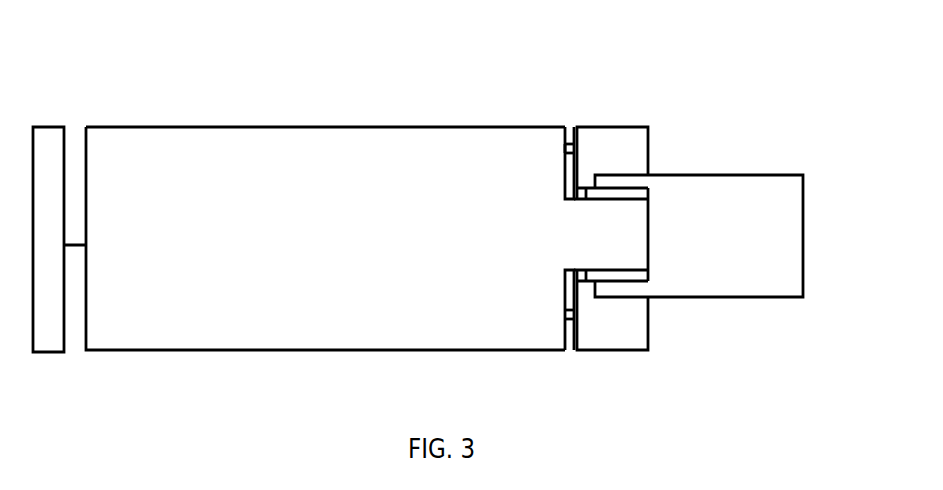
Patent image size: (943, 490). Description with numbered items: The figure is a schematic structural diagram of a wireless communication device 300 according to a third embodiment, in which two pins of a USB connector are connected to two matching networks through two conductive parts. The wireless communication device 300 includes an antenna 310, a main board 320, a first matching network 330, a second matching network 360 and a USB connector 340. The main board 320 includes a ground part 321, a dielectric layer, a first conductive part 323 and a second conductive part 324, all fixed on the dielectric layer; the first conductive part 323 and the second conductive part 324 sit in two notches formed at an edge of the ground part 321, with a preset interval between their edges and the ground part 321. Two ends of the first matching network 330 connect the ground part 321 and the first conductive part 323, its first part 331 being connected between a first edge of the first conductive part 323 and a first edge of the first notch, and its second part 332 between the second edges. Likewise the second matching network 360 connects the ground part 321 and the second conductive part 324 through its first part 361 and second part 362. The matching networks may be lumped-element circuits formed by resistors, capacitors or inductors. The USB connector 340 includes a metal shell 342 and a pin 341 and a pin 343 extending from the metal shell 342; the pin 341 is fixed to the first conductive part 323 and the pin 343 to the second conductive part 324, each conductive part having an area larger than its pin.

The wireless communication device 300 is at (447, 34).
The antenna 310 is at (55, 127).
The main board 320 is at (395, 89).
The ground part 321 is at (236, 127).
The first conductive part 323 is at (565, 128).
The second conductive part 324 is at (605, 338).
The first matching network 330 is at (436, 223).
The first part 331 is at (565, 154).
The second part 332 is at (573, 200).
The USB connector 340 is at (711, 244).
The pin 341 is at (638, 173).
The metal shell 342 is at (727, 173).
The pin 343 is at (625, 298).
The second matching network 360 is at (439, 298).
The first part 361 is at (566, 272).
The second part 362 is at (565, 310).